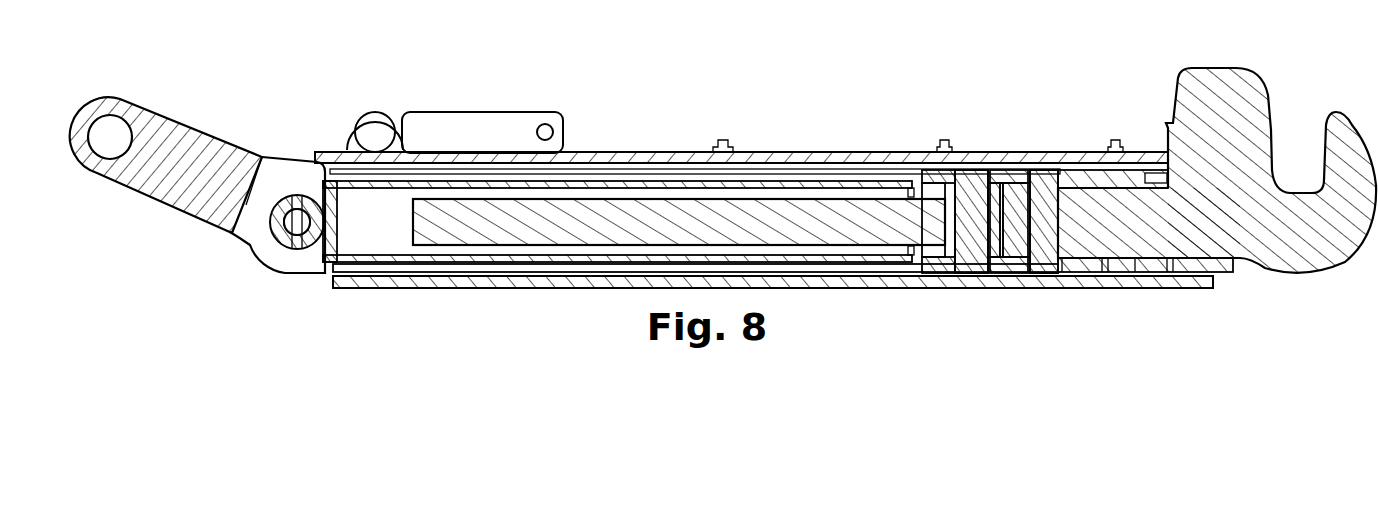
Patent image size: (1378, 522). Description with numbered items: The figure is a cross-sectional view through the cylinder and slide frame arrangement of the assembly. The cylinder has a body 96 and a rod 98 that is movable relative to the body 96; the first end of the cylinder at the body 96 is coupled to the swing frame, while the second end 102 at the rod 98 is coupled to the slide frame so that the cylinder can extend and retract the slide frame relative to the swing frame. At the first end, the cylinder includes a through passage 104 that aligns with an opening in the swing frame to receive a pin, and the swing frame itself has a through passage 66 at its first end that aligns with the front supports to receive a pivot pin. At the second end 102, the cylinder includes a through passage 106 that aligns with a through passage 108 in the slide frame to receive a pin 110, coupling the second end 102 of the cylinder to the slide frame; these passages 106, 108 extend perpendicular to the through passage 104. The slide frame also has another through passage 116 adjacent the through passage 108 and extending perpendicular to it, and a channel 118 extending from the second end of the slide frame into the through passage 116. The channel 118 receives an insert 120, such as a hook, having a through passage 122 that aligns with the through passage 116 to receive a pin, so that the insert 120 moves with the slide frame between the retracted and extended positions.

The through passage 66 is at (118, 143).
The body 96 is at (323, 247).
The rod 98 is at (665, 232).
The second end 102 is at (992, 252).
The through passage 104 is at (284, 208).
The through passage 106 is at (955, 228).
The through passage 108 is at (992, 195).
The pin 110 is at (970, 197).
The through passage 116 is at (1062, 260).
The channel 118 is at (1128, 177).
The insert 120 is at (1317, 223).
The through passage 122 is at (1060, 212).